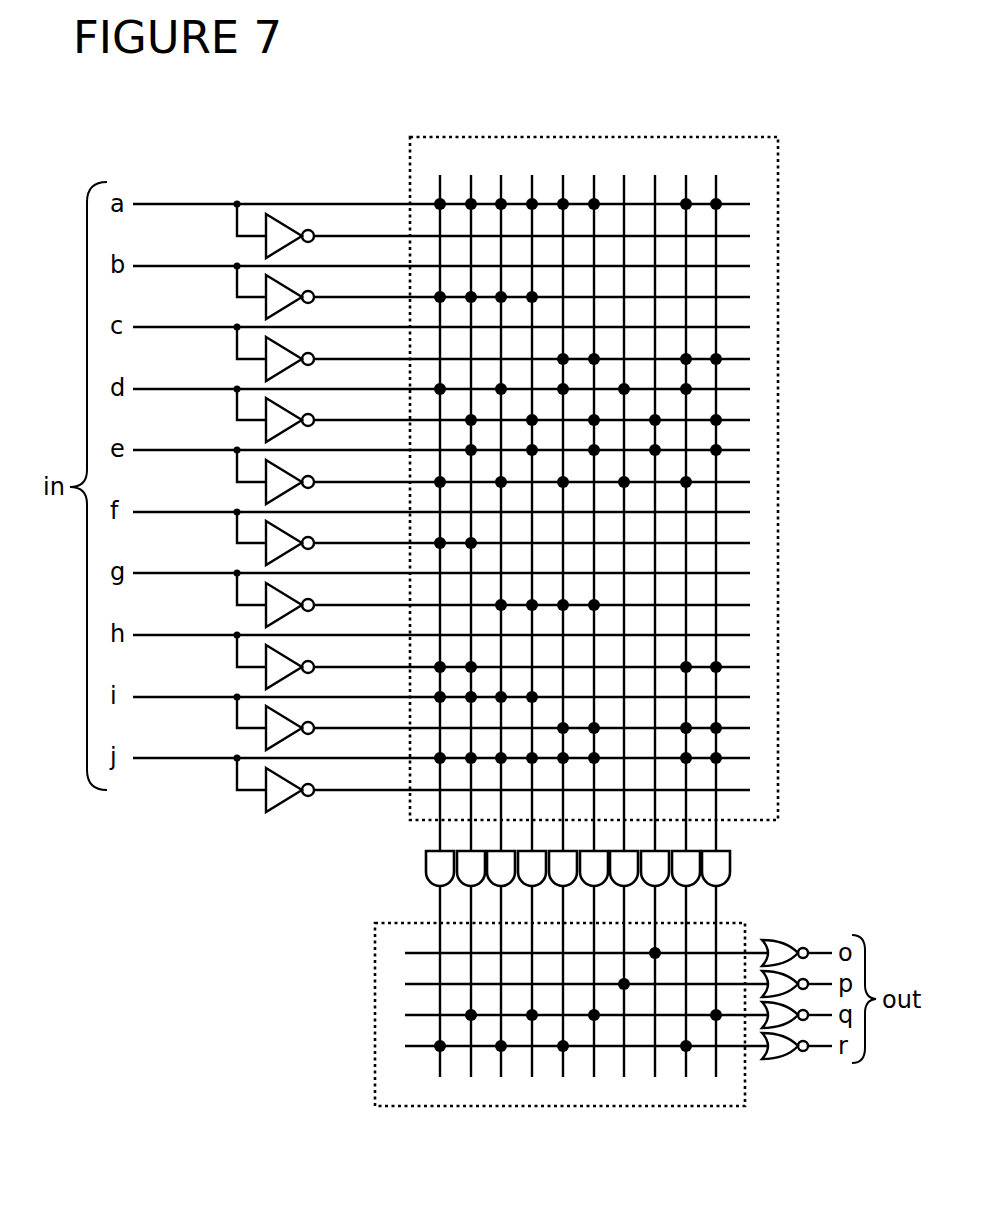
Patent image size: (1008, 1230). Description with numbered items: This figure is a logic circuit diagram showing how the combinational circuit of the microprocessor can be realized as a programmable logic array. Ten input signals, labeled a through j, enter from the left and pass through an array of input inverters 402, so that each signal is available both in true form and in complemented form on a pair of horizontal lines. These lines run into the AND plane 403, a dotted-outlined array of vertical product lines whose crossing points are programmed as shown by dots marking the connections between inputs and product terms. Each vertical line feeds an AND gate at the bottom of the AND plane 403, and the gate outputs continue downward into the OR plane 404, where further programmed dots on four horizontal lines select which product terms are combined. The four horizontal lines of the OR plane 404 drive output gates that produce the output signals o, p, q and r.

The input inverters 402 is at (287, 225).
The AND plane 403 is at (622, 137).
The OR plane 404 is at (375, 968).